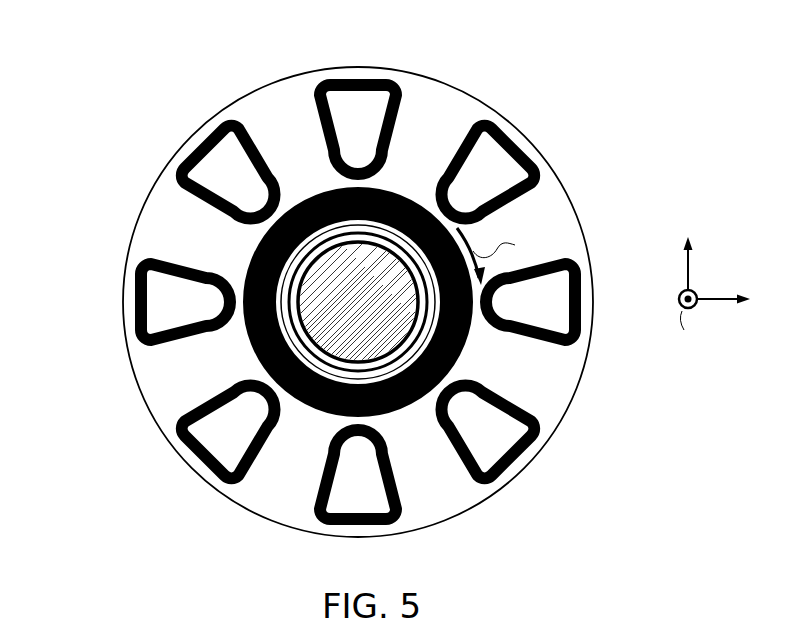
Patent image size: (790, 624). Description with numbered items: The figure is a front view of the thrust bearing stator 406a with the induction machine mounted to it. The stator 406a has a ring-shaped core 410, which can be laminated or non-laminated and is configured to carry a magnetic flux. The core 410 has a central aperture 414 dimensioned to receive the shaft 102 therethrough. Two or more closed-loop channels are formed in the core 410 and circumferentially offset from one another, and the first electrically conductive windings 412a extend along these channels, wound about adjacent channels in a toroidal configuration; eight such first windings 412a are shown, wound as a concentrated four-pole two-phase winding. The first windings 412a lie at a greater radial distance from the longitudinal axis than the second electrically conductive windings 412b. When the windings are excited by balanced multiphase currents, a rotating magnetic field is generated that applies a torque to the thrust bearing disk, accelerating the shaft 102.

The thrust bearing stator 406a is at (145, 115).
The core 410 is at (306, 140).
The first electrically conductive windings 412a is at (357, 80).
The second electrically conductive windings 412b is at (307, 390).
The aperture 414 is at (293, 323).
The shaft 102 is at (377, 313).